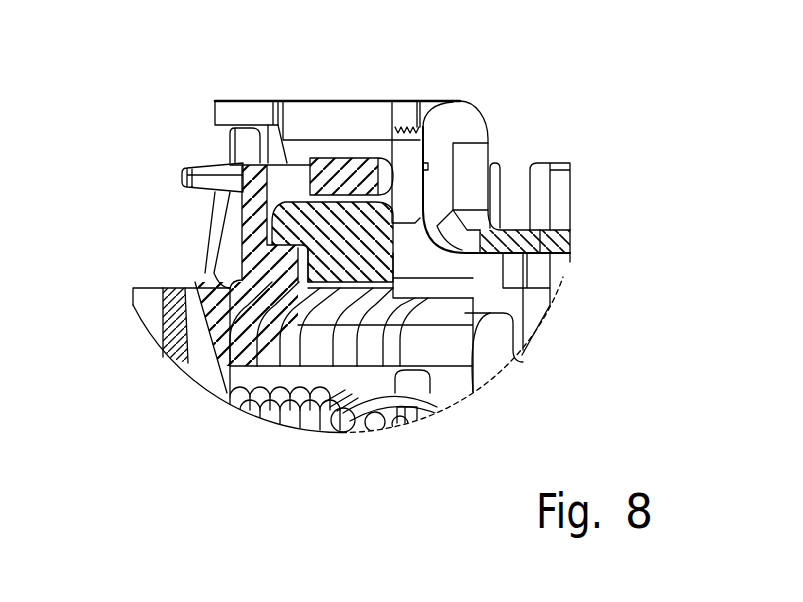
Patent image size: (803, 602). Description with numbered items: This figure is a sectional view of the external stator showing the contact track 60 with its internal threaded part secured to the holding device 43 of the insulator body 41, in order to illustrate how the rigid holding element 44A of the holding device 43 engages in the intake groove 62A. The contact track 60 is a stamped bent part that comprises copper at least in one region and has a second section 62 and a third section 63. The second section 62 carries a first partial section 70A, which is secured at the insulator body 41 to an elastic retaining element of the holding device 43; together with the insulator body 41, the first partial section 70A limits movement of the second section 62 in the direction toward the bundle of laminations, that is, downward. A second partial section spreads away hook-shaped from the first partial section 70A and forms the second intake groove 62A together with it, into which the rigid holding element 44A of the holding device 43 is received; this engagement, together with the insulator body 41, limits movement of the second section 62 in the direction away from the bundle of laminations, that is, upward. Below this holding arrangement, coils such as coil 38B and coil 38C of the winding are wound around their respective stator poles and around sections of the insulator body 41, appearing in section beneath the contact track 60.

The contact track 60 is at (218, 88).
The second section 62 is at (250, 112).
The first partial section 70A is at (350, 110).
The holding device 43 is at (205, 160).
The rigid holding element 44A is at (323, 183).
The third section 63 is at (541, 225).
The second intake groove 62A is at (414, 268).
The insulator body 41 is at (523, 362).
The coil 38C is at (400, 368).
The coil 38B is at (277, 410).